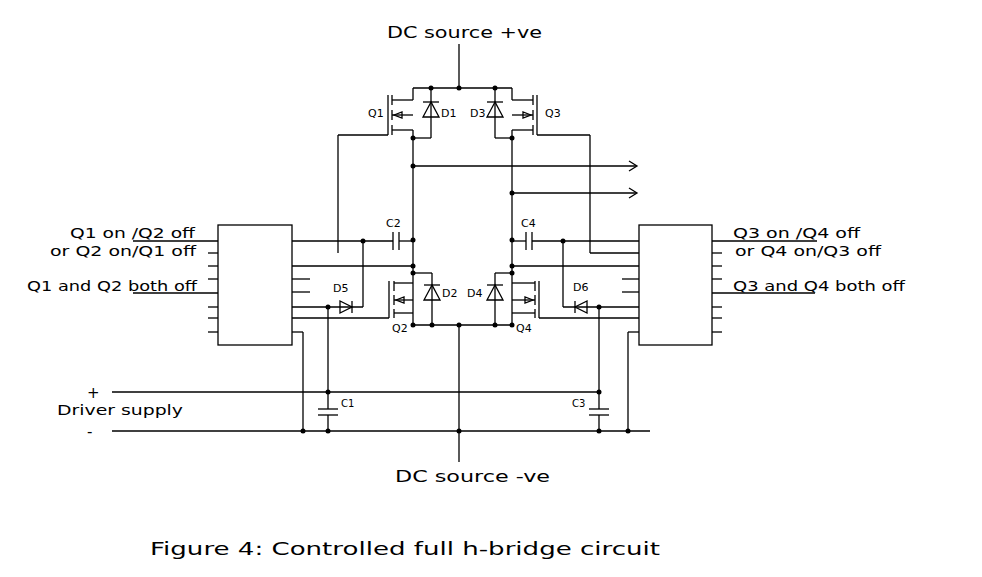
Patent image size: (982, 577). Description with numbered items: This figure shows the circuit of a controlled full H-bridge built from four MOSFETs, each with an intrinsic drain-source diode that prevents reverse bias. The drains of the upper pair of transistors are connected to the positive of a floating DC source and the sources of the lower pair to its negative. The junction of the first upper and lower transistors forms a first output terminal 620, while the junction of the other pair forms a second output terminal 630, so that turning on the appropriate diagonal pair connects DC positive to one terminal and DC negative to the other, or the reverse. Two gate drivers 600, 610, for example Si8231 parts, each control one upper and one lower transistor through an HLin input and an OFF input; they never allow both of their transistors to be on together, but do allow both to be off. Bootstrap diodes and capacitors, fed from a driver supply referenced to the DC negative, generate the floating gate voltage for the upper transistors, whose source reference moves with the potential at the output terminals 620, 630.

The gate driver 600 is at (225, 352).
The gate driver 610 is at (708, 351).
The first output terminal 620 is at (650, 169).
The second output terminal 630 is at (699, 197).